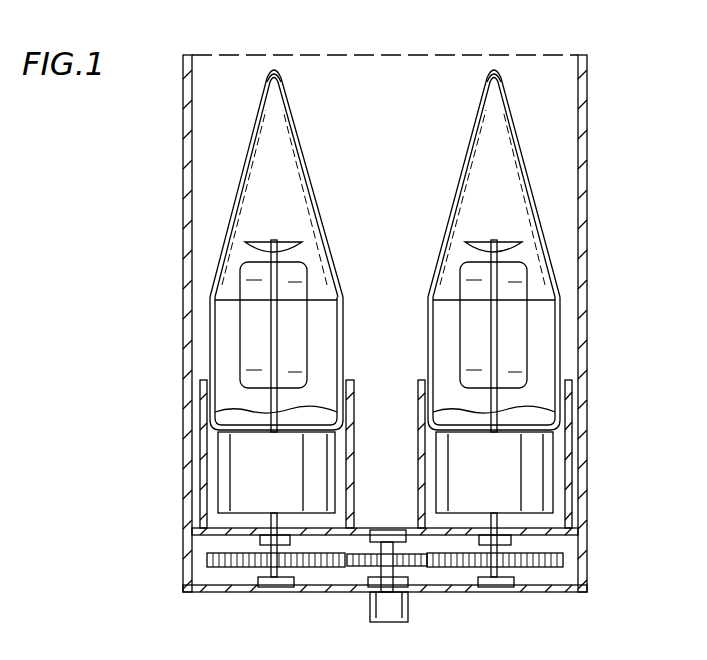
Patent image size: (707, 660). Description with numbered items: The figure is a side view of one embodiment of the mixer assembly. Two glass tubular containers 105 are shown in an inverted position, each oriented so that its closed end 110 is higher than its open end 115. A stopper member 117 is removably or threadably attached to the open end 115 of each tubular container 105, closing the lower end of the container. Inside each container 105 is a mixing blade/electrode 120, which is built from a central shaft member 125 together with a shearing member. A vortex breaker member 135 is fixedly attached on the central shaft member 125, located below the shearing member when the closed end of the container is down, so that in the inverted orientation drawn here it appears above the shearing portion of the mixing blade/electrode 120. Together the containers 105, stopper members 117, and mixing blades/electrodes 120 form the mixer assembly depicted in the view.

The glass tubular container 105 is at (298, 125).
The closed end 110 is at (275, 67).
The open end 115 is at (220, 432).
The stopper member 117 is at (231, 488).
The mixing blade/electrode 120 is at (470, 280).
The central shaft member 125 is at (267, 410).
The vortex breaker member 135 is at (246, 240).